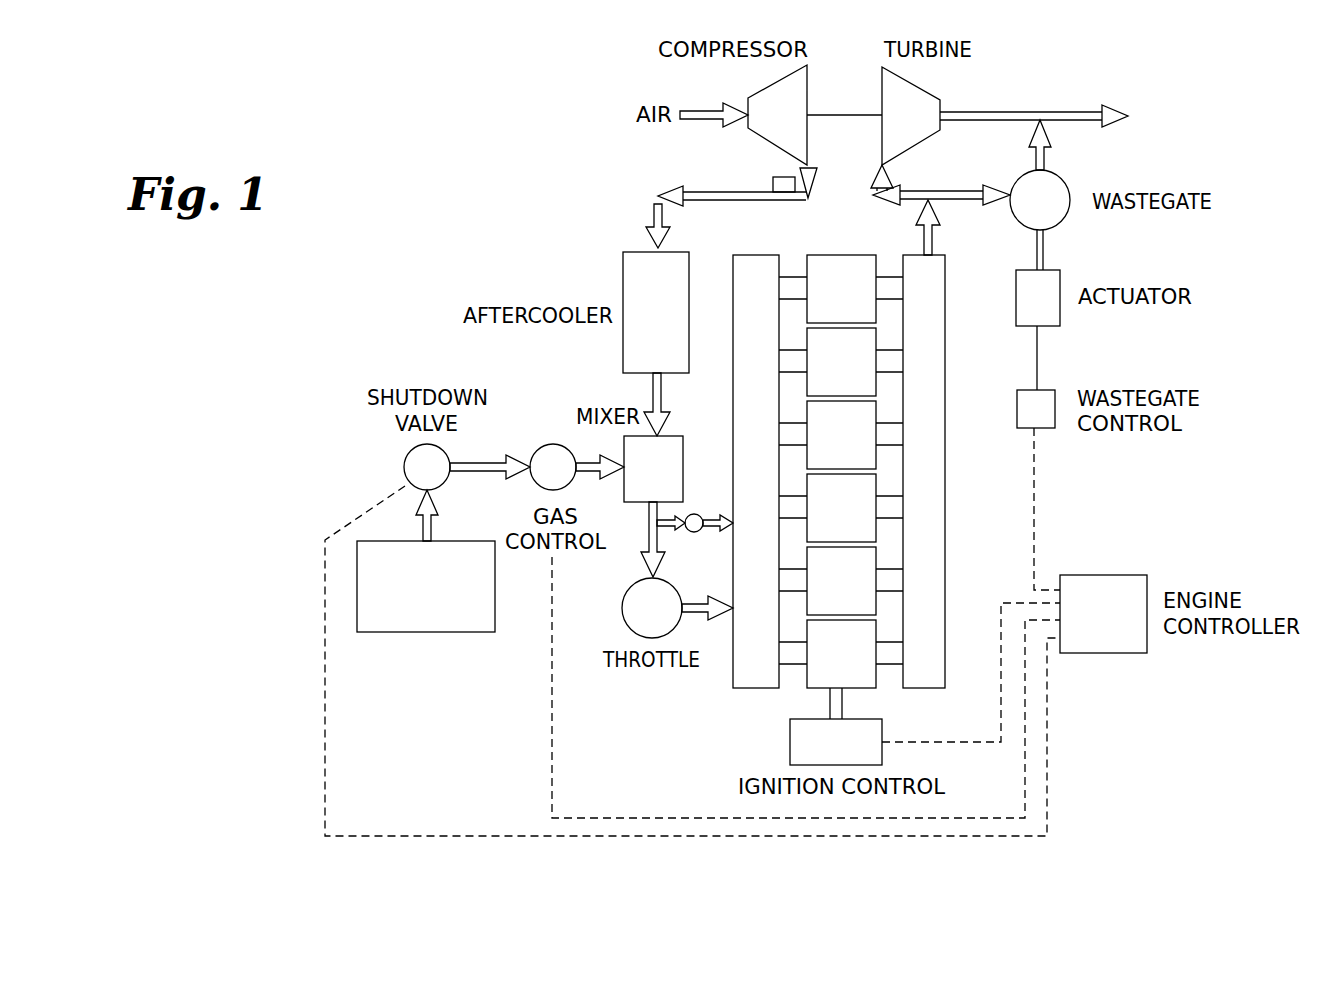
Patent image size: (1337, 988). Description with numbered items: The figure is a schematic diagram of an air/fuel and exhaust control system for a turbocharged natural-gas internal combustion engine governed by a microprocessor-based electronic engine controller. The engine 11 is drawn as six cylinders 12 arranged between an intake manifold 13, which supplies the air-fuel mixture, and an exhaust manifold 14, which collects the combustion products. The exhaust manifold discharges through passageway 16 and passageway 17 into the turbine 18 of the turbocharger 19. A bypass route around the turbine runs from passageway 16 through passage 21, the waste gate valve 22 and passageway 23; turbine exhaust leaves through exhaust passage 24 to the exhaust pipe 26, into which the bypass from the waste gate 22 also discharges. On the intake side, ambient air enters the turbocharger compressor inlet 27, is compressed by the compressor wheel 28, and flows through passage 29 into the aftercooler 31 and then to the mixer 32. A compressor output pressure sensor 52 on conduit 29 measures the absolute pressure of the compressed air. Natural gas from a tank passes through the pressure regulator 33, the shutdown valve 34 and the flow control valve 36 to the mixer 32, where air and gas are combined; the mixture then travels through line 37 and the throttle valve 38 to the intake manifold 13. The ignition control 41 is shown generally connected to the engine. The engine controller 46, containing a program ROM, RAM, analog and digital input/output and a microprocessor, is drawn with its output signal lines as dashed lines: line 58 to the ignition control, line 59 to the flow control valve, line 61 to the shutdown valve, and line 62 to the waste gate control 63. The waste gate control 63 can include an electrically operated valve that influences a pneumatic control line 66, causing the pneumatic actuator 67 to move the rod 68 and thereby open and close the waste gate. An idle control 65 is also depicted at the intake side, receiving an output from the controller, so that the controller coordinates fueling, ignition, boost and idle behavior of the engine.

The engine 11 is at (790, 252).
The cylinders 12 is at (838, 255).
The intake manifold 13 is at (733, 676).
The exhaust manifold 14 is at (945, 540).
The passageway 16 is at (932, 236).
The passageway 17 is at (915, 201).
The turbine 18 is at (940, 96).
The turbocharger 19 is at (850, 56).
The passage 21 is at (960, 192).
The waste gate valve 22 is at (1065, 218).
The passageway 23 is at (1044, 158).
The exhaust passage 24 is at (980, 111).
The exhaust pipe 26 is at (1085, 110).
The turbocharger compressor inlet 27 is at (748, 104).
The compressor wheel 28 is at (756, 135).
The passage 29 is at (676, 193).
The aftercooler 31 is at (623, 276).
The mixer 32 is at (624, 447).
The pressure regulator 33 is at (441, 632).
The shutdown valve 34 is at (404, 464).
The flow control valve 36 is at (537, 483).
The line 37 is at (648, 535).
The throttle valve 38 is at (622, 612).
The ignition control 41 is at (790, 740).
The engine controller 46 is at (1147, 653).
The compressor output pressure sensor 52 is at (773, 185).
The output signal line 58 is at (955, 742).
The output signal line 59 is at (600, 818).
The output signal line 61 is at (415, 835).
The output signal line 62 is at (1034, 502).
The waste gate control 63 is at (1055, 428).
The idle control 65 is at (694, 514).
The pneumatic control line 66 is at (1037, 360).
The actuator 67 is at (1060, 322).
The rod 68 is at (1043, 250).